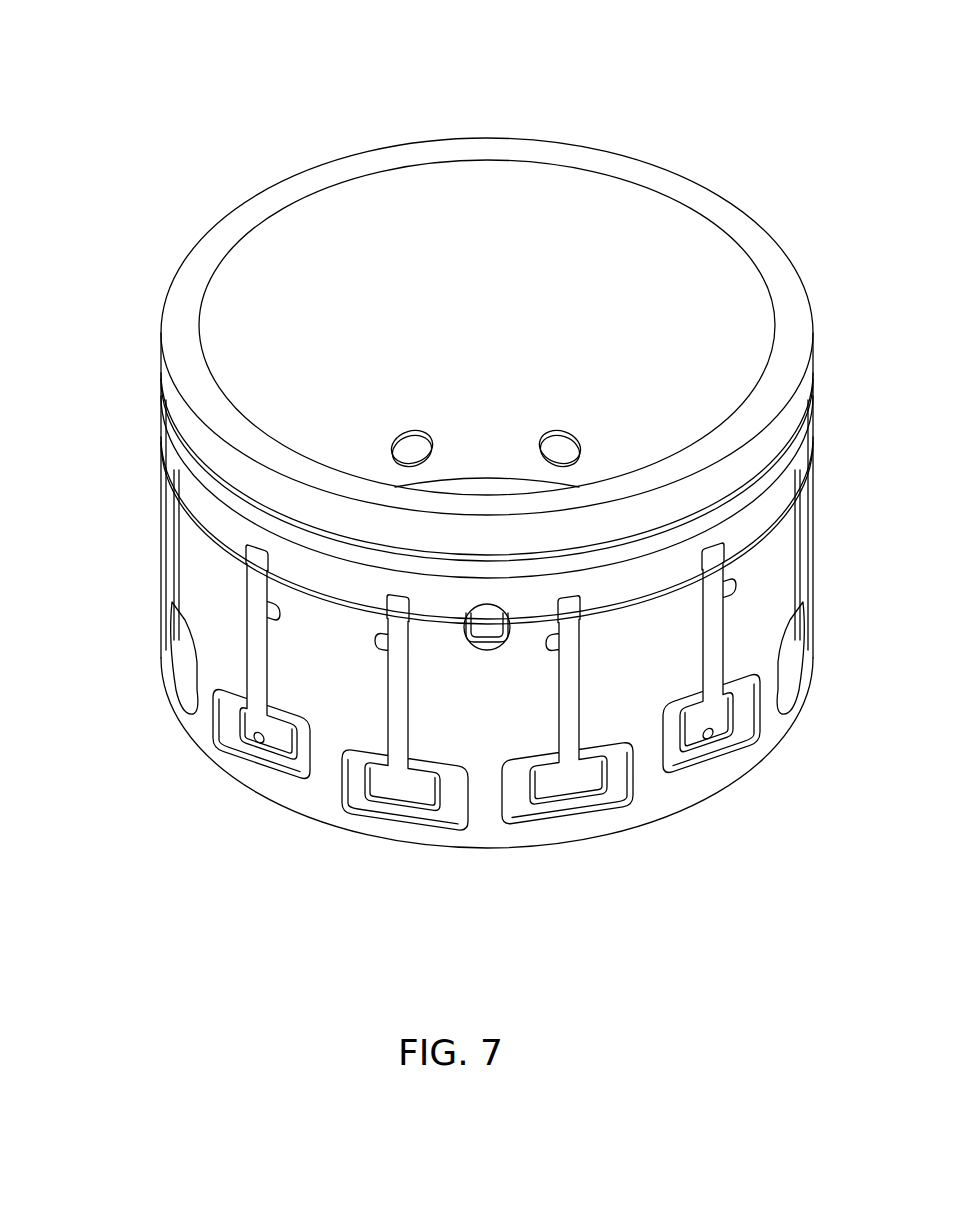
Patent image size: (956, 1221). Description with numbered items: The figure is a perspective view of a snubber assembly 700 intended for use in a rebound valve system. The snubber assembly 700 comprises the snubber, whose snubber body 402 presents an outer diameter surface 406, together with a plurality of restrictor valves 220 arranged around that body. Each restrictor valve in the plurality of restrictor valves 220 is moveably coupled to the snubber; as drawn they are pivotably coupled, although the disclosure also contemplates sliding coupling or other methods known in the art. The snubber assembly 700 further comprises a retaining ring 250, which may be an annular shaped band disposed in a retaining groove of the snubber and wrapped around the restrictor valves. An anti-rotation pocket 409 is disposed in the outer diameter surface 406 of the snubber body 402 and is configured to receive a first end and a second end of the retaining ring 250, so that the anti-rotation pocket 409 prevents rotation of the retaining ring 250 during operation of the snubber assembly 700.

The snubber assembly 700 is at (176, 84).
The retaining ring 250 is at (197, 526).
The snubber body 402 is at (190, 601).
The outer diameter surface 406 is at (217, 649).
The plurality of restrictor valves 220 is at (248, 648).
The anti-rotation pocket 409 is at (483, 648).